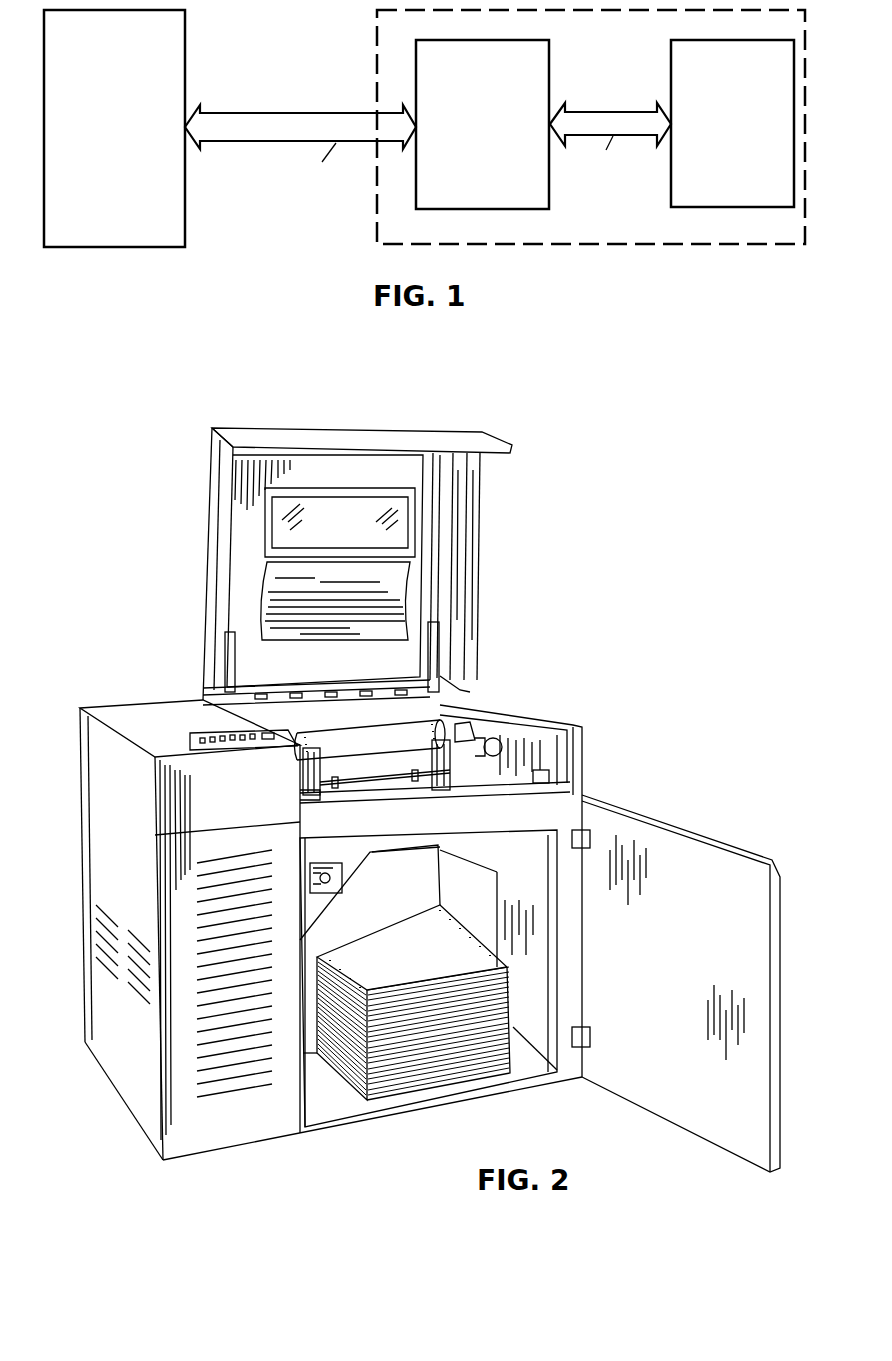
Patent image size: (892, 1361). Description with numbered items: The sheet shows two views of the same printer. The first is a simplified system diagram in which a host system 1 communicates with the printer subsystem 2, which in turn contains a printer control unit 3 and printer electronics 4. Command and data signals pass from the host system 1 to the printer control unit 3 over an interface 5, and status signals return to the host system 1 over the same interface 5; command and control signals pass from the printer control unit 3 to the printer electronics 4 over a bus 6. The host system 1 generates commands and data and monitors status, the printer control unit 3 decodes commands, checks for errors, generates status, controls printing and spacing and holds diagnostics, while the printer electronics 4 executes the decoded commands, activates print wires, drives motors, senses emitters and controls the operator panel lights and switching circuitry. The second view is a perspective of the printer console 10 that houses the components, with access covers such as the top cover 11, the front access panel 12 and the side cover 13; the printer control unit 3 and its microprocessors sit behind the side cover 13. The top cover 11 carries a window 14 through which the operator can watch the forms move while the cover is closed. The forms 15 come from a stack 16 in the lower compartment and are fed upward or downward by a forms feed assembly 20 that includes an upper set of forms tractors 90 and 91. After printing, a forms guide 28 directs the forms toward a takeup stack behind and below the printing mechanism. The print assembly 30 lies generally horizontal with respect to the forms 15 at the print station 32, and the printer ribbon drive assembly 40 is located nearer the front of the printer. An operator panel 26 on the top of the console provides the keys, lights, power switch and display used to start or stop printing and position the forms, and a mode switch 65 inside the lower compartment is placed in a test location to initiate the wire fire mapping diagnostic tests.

In FIG. 1, the host system 1 is at (186, 36).
In FIG. 1, the printer subsystem 2 is at (377, 46).
In FIG. 1, the printer control unit 3 is at (551, 44).
In FIG. 1, the printer electronics 4 is at (681, 40).
In FIG. 1, the interface 5 is at (238, 112).
In FIG. 1, the bus 6 is at (612, 111).
In FIG. 2, the console 10 is at (596, 721).
In FIG. 2, the top cover 11 is at (477, 485).
In FIG. 2, the access panel 12 is at (682, 810).
In FIG. 2, the side cover 13 is at (107, 860).
In FIG. 2, the window 14 is at (397, 527).
In FIG. 2, the forms 15 is at (395, 727).
In FIG. 2, the stack 16 is at (415, 1085).
In FIG. 2, the forms feed assembly 20 is at (480, 726).
In FIG. 2, the operator panel 26 is at (193, 742).
In FIG. 2, the forms guide 28 is at (453, 727).
In FIG. 2, the print assembly 30 is at (303, 795).
In FIG. 2, the print station 32 is at (377, 768).
In FIG. 2, the printer ribbon drive assembly 40 is at (430, 790).
In FIG. 2, the mode switch 65 is at (338, 885).
In FIG. 2, the tractor 90 is at (317, 755).
In FIG. 2, the tractor 91 is at (432, 745).